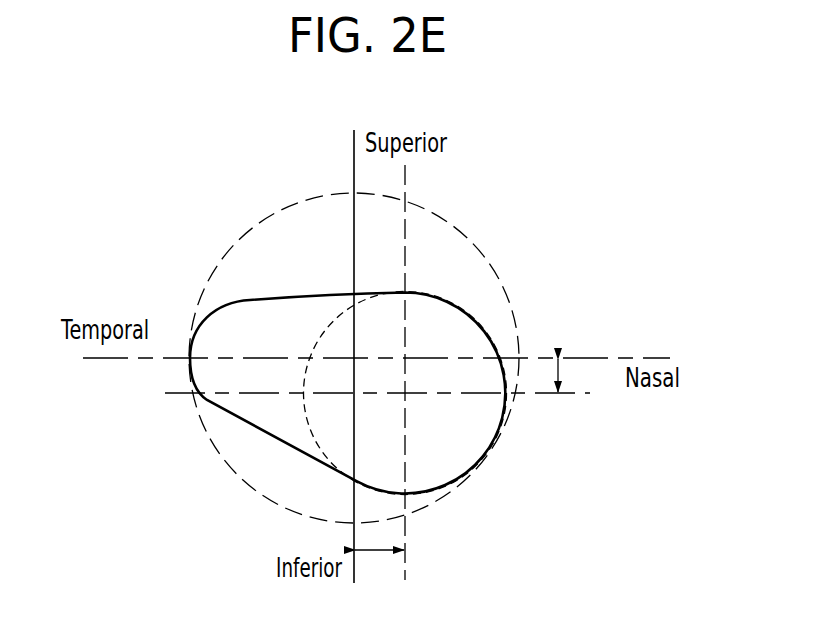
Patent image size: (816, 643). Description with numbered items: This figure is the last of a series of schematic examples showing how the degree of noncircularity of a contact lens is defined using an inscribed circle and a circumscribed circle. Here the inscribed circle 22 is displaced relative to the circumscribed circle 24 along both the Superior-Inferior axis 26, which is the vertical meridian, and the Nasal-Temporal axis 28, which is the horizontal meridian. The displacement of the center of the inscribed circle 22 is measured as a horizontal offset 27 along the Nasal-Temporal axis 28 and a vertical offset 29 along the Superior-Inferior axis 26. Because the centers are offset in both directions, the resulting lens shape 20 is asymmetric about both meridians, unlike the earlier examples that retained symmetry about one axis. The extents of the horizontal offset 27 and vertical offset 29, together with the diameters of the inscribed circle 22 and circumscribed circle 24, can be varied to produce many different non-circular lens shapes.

The lens 20 is at (284, 444).
The inscribed circle 22 is at (306, 404).
The circumscribed circle 24 is at (491, 254).
The Superior-Inferior axis 26 is at (351, 163).
The horizontal offset 27 is at (378, 553).
The Nasal-Temporal axis 28 is at (613, 356).
The vertical offset 29 is at (561, 376).